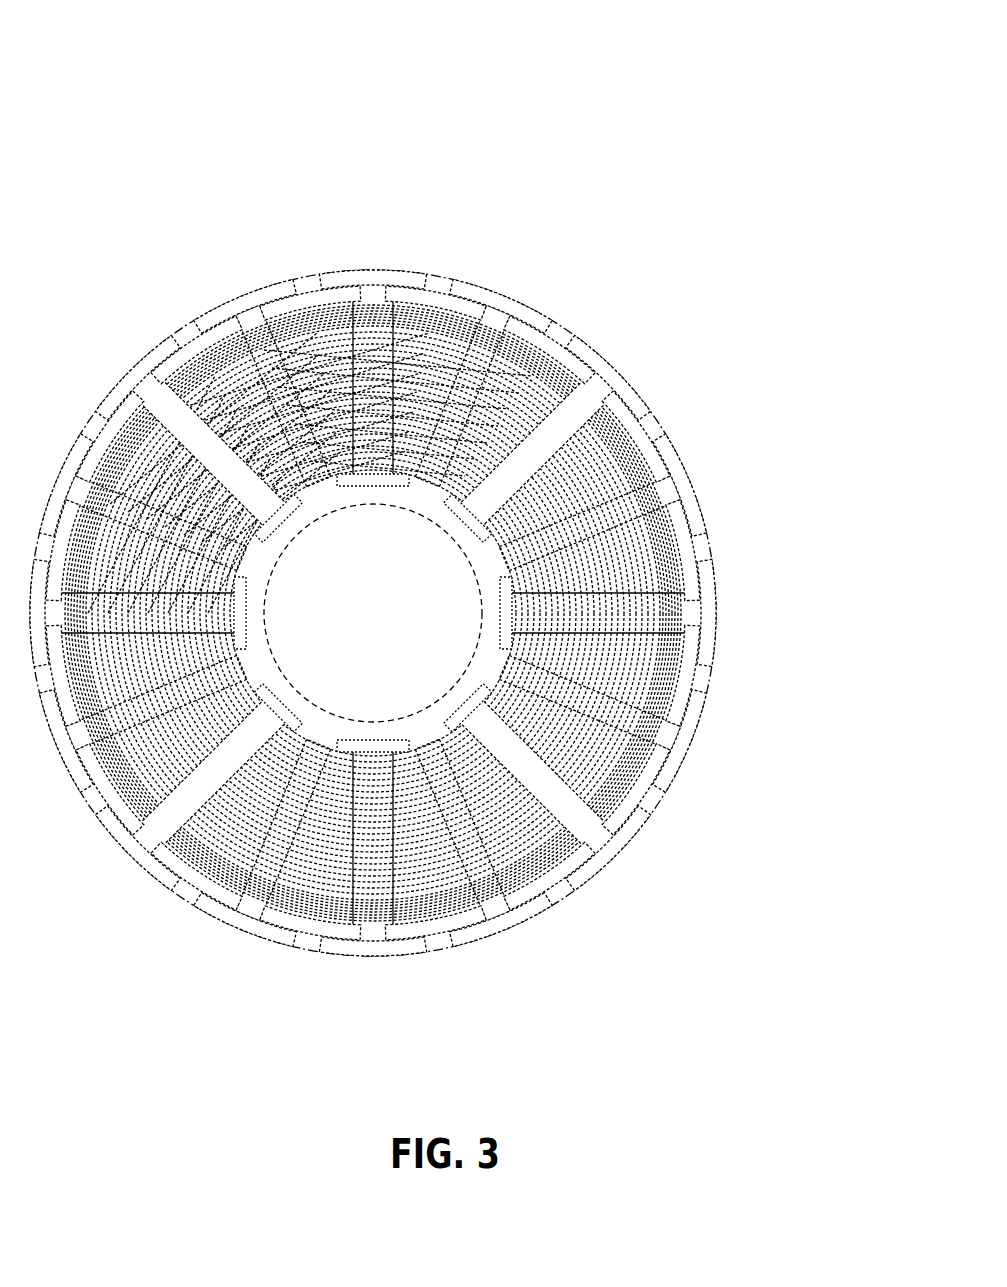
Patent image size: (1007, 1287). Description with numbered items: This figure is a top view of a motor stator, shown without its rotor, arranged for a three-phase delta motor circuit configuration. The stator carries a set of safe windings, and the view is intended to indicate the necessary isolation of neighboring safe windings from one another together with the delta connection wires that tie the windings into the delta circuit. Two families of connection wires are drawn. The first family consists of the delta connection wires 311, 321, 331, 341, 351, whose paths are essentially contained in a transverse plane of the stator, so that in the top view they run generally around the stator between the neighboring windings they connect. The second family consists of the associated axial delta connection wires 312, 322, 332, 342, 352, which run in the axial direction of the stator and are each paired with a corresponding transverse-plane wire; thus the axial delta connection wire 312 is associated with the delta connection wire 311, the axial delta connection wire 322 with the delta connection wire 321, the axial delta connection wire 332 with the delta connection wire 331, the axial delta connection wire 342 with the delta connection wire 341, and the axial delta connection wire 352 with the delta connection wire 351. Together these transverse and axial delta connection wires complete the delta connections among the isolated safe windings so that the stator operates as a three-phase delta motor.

The Δ connection wire 311 is at (474, 602).
The axial Δ connection wire 312 is at (373, 451).
The Δ connection wire 321 is at (470, 613).
The axial Δ connection wire 322 is at (373, 483).
The Δ connection wire 331 is at (485, 613).
The axial Δ connection wire 332 is at (373, 505).
The Δ connection wire 341 is at (509, 613).
The axial Δ connection wire 342 is at (373, 516).
The Δ connection wire 351 is at (539, 613).
The axial Δ connection wire 352 is at (373, 509).